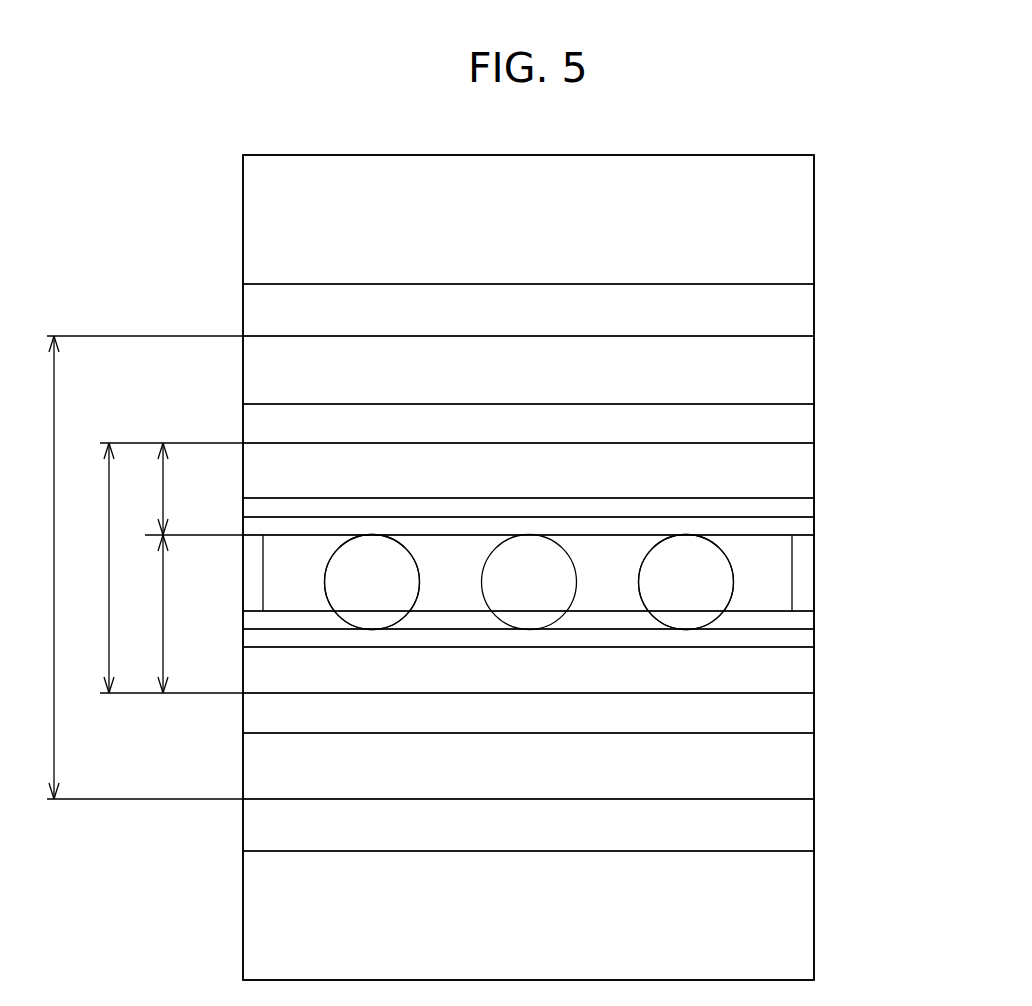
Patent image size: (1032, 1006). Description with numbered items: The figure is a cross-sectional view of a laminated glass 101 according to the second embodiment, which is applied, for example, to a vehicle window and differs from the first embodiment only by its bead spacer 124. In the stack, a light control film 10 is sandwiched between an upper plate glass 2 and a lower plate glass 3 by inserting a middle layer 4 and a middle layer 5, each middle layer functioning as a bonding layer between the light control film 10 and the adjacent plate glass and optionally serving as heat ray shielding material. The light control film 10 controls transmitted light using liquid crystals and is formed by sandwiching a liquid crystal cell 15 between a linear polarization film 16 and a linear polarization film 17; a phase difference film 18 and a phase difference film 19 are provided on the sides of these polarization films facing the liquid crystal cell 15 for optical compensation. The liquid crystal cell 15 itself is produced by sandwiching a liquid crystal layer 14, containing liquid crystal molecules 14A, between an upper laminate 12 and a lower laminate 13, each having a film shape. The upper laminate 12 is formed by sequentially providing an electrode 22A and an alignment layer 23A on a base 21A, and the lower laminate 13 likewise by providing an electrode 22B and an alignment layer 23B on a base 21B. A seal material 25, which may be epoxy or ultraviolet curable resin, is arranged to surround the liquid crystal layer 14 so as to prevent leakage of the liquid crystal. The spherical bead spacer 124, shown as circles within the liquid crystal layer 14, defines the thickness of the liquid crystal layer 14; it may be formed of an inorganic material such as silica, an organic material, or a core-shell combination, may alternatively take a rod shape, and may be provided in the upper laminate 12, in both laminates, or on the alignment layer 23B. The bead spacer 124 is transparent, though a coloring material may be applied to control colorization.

The laminated glass 101 is at (260, 102).
The plate glass 2 is at (803, 216).
The middle layer 4 is at (803, 307).
The linear polarization film 16 is at (252, 372).
The phase difference film 18 is at (252, 422).
The base 21A is at (803, 468).
The electrode 22A is at (805, 503).
The alignment layer 23A is at (805, 523).
The seal material 25 is at (262, 571).
The liquid crystal layer 14 is at (782, 596).
The liquid crystal molecules 14A is at (372, 582).
The bead spacer 124 is at (700, 608).
The alignment layer 23B is at (805, 619).
The electrode 22B is at (805, 638).
The base 21B is at (805, 666).
The phase difference film 19 is at (252, 717).
The linear polarization film 17 is at (252, 768).
The middle layer 5 is at (803, 822).
The plate glass 3 is at (803, 912).
The light control film 10 is at (130, 567).
The liquid crystal cell 15 is at (157, 568).
The upper laminate 12 is at (185, 489).
The lower laminate 13 is at (147, 614).